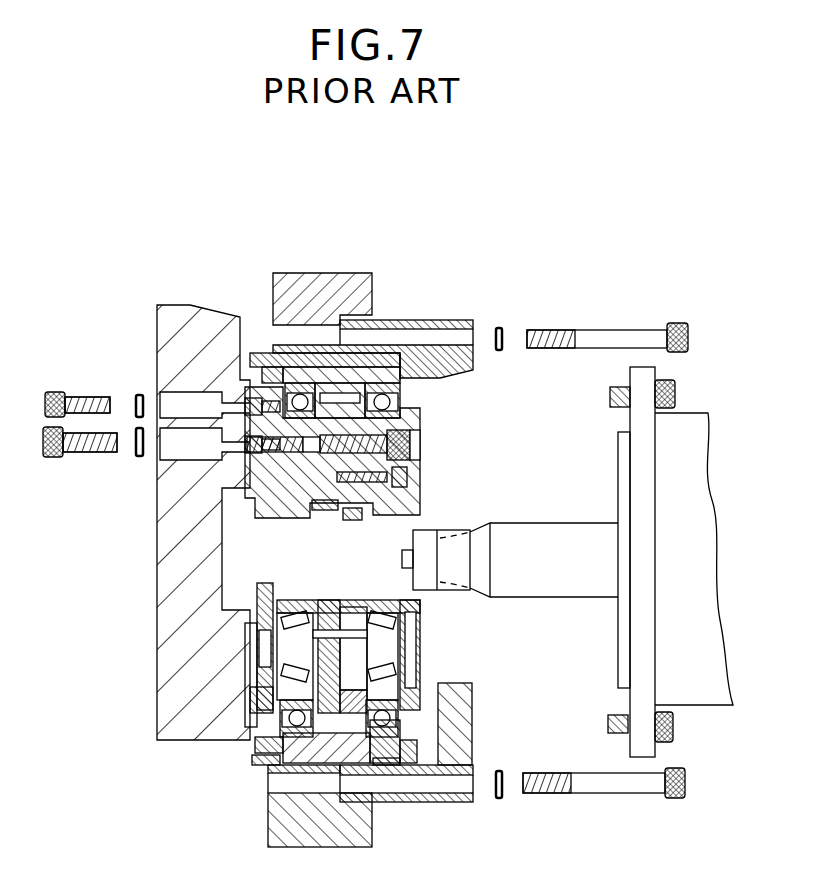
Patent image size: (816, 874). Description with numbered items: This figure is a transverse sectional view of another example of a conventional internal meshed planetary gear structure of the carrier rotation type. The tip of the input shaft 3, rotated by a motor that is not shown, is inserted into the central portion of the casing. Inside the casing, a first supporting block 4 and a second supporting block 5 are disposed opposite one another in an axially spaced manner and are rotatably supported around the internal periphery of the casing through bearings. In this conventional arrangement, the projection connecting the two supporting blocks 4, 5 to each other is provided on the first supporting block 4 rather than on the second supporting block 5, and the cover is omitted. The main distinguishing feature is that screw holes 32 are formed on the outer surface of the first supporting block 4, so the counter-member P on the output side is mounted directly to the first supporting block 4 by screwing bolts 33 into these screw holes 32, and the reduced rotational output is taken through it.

The counter-member P is at (157, 698).
The input shaft 3 is at (505, 580).
The first supporting block 4 is at (280, 478).
The second supporting block 5 is at (420, 492).
The screw holes 32 is at (222, 450).
The bolts 33 is at (42, 440).